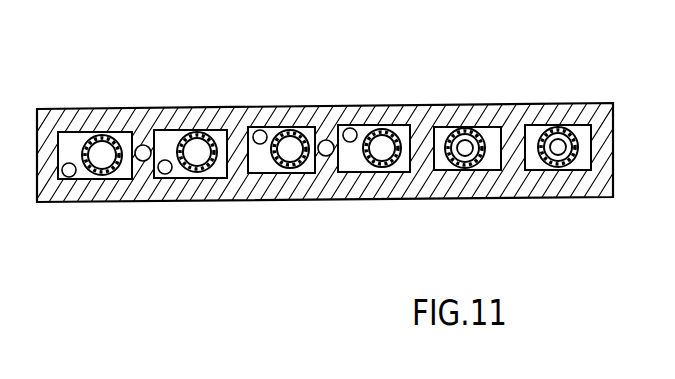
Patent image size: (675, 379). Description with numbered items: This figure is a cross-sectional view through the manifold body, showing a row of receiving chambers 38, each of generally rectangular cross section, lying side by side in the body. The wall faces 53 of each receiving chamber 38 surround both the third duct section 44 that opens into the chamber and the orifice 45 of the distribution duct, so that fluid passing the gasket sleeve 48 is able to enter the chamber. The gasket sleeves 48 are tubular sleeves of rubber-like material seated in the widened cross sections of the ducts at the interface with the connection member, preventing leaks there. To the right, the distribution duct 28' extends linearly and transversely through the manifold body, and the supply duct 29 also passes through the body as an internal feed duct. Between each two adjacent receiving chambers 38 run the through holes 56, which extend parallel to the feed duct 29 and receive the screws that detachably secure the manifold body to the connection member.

The wall faces 53 is at (114, 120).
The through holes 56 is at (143, 150).
The third duct section 44 is at (260, 137).
The orifice 45 is at (382, 140).
The distribution duct 28' is at (467, 98).
The supply duct 29 is at (558, 147).
The gasket sleeve 48 is at (102, 185).
The receiving chamber 38 is at (257, 170).